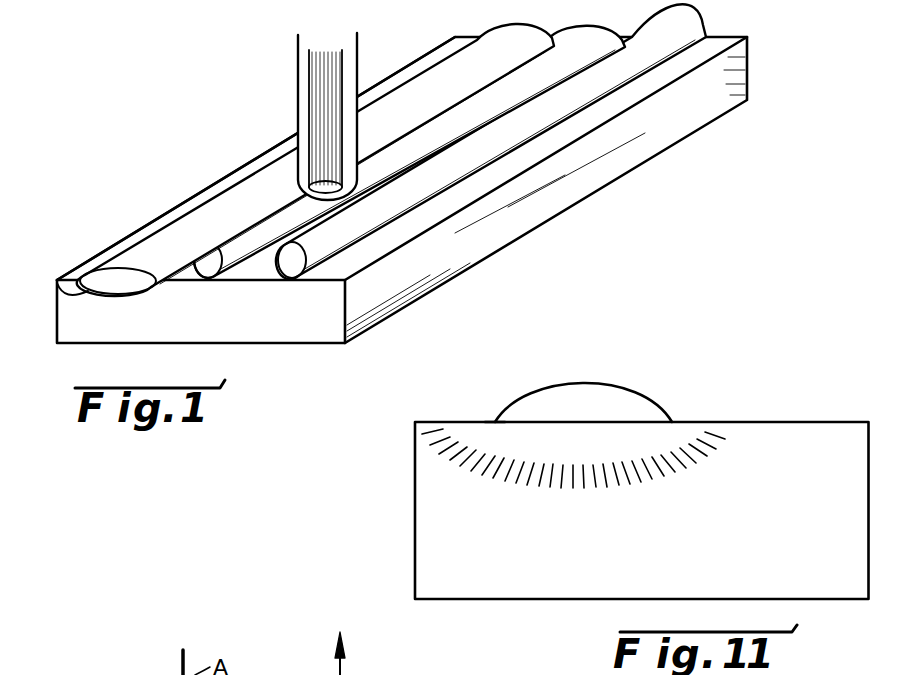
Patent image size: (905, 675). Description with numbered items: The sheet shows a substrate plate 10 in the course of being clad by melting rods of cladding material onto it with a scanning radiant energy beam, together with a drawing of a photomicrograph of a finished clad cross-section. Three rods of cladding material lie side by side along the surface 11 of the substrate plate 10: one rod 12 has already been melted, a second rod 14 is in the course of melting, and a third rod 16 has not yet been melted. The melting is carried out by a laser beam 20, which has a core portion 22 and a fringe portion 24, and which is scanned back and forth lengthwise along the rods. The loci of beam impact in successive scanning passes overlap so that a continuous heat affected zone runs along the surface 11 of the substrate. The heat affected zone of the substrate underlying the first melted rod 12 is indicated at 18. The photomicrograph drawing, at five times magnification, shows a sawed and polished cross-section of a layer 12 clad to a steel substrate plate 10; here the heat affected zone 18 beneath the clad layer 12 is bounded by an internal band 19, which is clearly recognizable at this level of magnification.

In FIG. 1, the substrate plate 10 is at (72, 322).
In FIG. 11, the substrate plate 10 is at (395, 470).
In FIG. 1, the surface of the substrate 11 is at (180, 211).
In FIG. 1, the melted rod of cladding material 12 is at (93, 276).
In FIG. 11, the melted rod of cladding material 12 is at (648, 402).
In FIG. 1, the rod of cladding material in the course of melting 14 is at (210, 270).
In FIG. 1, the unmelted rod of cladding material 16 is at (293, 266).
In FIG. 1, the heat affected zone 18 is at (58, 289).
In FIG. 11, the heat affected zone 18 is at (492, 432).
In FIG. 11, the internal band 19 is at (640, 472).
In FIG. 1, the laser beam 20 is at (292, 102).
In FIG. 1, the core portion of the beam 22 is at (320, 80).
In FIG. 1, the fringe portion of the beam 24 is at (360, 35).